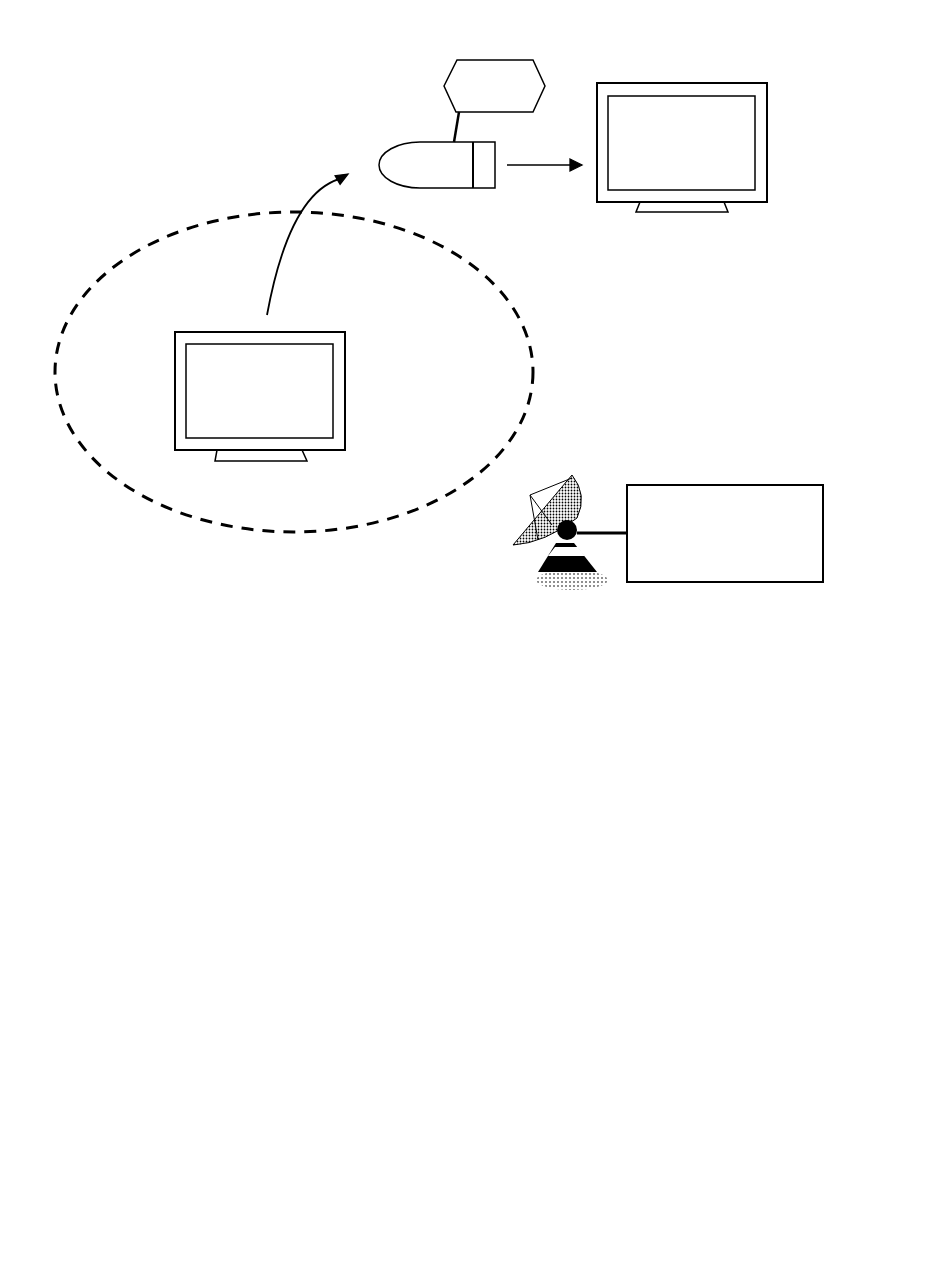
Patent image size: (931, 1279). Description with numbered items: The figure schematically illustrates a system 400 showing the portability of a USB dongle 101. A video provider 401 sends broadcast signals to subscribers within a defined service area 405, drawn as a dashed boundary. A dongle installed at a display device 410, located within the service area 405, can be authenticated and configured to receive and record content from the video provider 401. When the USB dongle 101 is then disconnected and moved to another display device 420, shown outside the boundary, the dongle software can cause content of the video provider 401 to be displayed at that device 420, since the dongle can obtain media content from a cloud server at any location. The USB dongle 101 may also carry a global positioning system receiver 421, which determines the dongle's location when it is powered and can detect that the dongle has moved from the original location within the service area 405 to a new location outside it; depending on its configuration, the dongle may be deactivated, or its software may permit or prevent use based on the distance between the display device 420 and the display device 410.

The system 400 is at (473, 1090).
The USB dongle 101 is at (437, 142).
The global positioning system (GPS) receiver 421 is at (509, 63).
The display device 420 is at (726, 82).
The service area 405 is at (213, 225).
The display device 410 is at (345, 390).
The video provider 401 is at (756, 484).